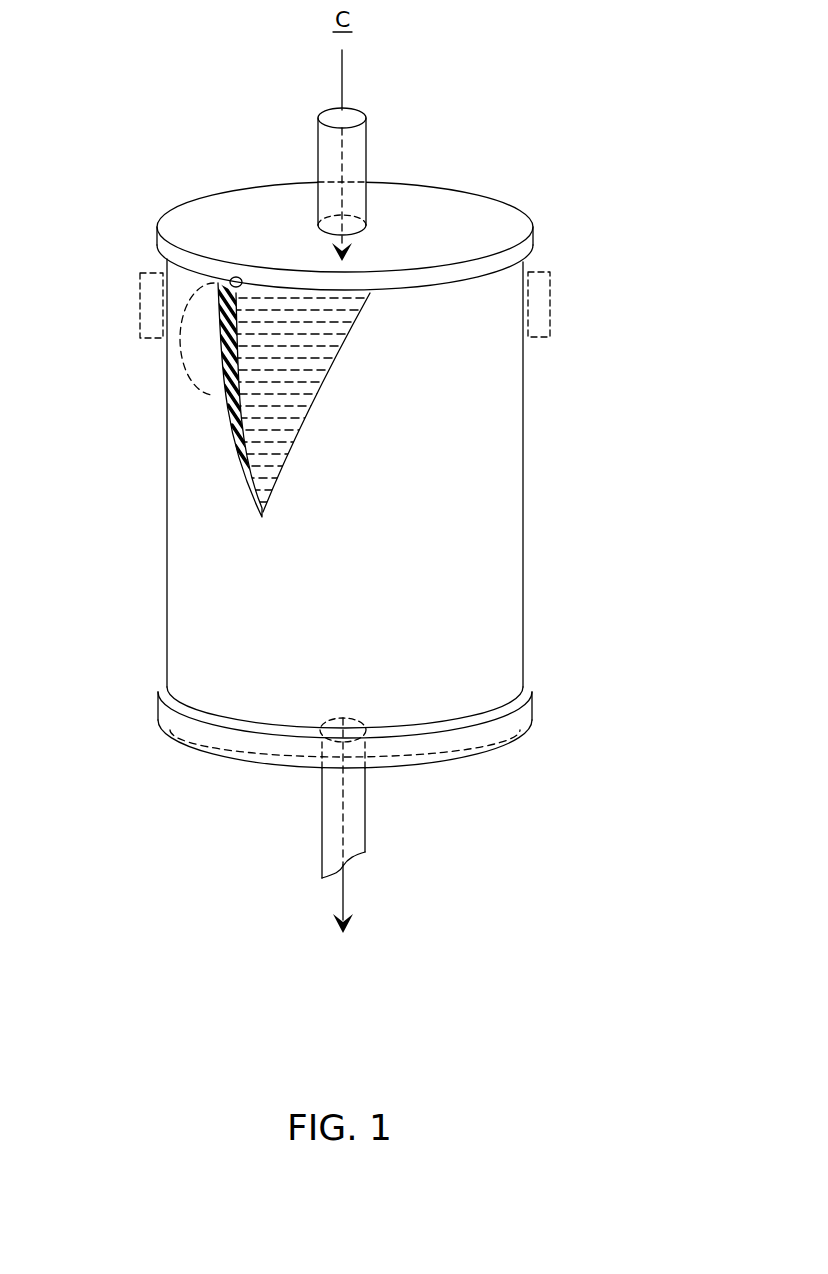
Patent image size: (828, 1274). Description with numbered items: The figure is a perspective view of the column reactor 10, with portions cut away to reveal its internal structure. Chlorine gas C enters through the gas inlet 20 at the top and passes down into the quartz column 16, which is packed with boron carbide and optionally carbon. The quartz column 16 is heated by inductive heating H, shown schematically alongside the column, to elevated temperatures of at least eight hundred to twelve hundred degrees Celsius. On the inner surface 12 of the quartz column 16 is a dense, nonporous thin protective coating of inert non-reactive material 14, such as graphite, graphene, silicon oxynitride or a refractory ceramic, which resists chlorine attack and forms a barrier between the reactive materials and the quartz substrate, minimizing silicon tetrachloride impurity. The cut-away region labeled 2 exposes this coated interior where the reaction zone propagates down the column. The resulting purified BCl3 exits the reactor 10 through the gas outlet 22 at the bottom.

The reactor 10 is at (506, 142).
The gas inlet 20 is at (367, 147).
The inductive heating H is at (148, 273).
The quartz column 16 is at (536, 498).
The inner surface 12 is at (208, 285).
The inert non-reactive material 14 is at (240, 354).
The reaction zone 2 is at (178, 340).
The gas outlet 22 is at (322, 775).